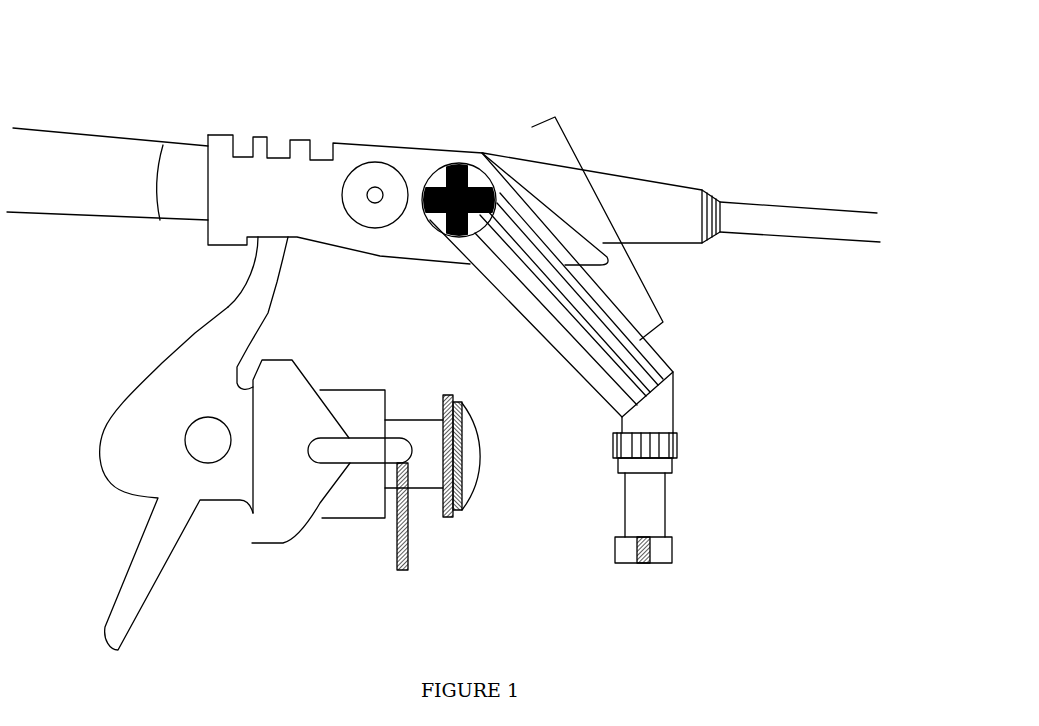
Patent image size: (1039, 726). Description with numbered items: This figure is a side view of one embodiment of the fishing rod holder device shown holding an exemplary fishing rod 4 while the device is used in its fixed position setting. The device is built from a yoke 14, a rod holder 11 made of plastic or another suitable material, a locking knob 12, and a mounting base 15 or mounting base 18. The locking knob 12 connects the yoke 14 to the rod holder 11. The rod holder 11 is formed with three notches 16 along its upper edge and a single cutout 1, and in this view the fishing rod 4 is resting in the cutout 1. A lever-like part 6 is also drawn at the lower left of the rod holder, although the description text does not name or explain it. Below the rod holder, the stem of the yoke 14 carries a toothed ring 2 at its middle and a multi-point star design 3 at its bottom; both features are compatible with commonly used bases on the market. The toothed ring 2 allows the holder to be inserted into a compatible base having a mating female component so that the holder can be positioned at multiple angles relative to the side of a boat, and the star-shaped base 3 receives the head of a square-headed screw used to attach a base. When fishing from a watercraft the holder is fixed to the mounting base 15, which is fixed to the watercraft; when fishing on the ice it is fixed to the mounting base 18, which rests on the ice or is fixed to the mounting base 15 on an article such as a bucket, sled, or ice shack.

The cutout 1 is at (293, 256).
The toothed ring 2 is at (681, 452).
The multi-point star design 3 is at (678, 559).
The fishing rod 4 is at (87, 124).
The trigger 6 is at (122, 377).
The rod holder 11 is at (372, 134).
The locking knob 12 is at (463, 152).
The yoke 14 is at (687, 388).
The mounting base 15 is at (402, 154).
The notches 16 is at (281, 125).
The mounting base 18 is at (611, 219).